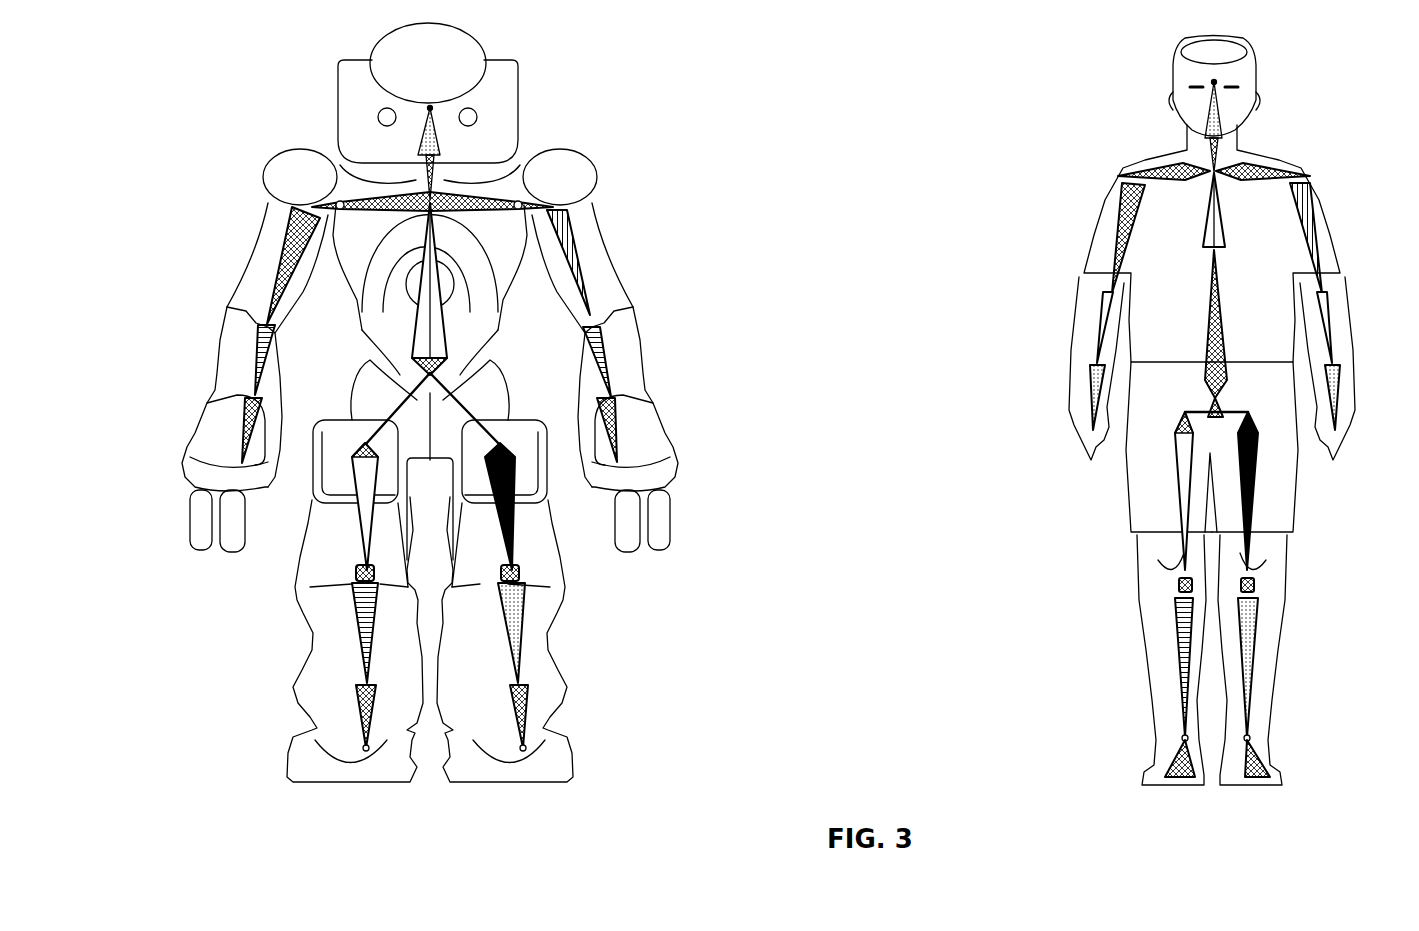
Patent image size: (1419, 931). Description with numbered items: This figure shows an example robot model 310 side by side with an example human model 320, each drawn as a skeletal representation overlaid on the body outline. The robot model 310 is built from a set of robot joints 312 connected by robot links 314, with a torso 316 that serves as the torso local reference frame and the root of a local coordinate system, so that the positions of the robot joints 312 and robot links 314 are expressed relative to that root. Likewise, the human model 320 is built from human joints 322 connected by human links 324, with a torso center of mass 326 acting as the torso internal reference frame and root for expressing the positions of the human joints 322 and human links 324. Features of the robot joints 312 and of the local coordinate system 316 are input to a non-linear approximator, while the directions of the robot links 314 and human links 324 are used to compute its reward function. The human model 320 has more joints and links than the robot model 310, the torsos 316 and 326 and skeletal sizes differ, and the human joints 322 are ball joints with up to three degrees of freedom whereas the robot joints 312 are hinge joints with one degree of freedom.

The robot model 310 is at (258, 95).
The robot joints 312 is at (545, 200).
The robot links 314 is at (573, 238).
The torso 316 is at (433, 373).
The human model 320 is at (1068, 104).
The human joints 322 is at (1291, 182).
The human links 324 is at (1310, 210).
The torso center of mass 326 is at (1205, 412).